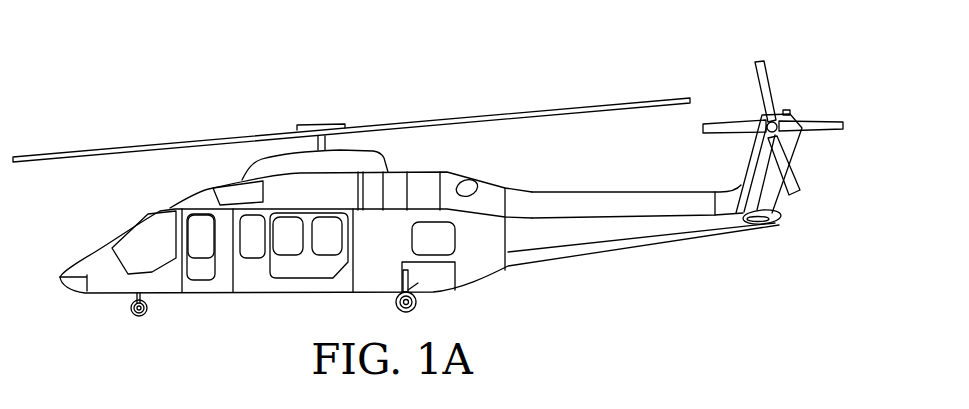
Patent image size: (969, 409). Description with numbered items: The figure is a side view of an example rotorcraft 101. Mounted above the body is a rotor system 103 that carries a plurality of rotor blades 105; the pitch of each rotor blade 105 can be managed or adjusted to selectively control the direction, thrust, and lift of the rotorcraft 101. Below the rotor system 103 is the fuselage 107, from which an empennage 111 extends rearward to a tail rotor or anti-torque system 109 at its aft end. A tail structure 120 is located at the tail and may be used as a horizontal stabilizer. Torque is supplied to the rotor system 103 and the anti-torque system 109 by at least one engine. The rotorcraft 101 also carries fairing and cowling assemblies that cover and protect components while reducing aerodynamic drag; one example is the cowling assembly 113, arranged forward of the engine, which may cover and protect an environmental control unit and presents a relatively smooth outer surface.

The rotorcraft 101 is at (208, 64).
The rotor system 103 is at (335, 106).
The rotor blade 105 is at (157, 147).
The fuselage 107 is at (252, 295).
The tail rotor or anti-torque system 109 is at (796, 97).
The empennage 111 is at (642, 249).
The cowling assembly 113 is at (179, 191).
The tail structure 120 is at (760, 225).